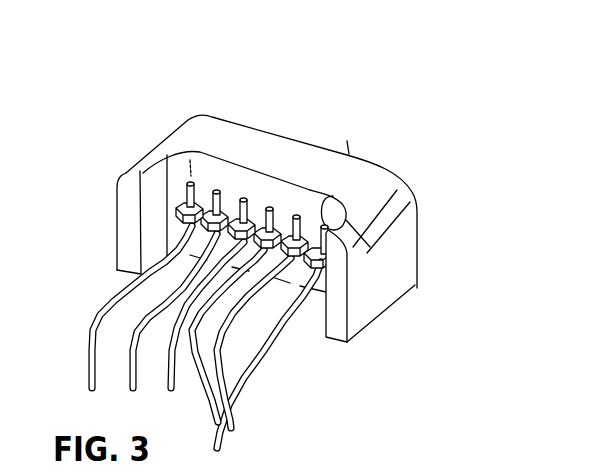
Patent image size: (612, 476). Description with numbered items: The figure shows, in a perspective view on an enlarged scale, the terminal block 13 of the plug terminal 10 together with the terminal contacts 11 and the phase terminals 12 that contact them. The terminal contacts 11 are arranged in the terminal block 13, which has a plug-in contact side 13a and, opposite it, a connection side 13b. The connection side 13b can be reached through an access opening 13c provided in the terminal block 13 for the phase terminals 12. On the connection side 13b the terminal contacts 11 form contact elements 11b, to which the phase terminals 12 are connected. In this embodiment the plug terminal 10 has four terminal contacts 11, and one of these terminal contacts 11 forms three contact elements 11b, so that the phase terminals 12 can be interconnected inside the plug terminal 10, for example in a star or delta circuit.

The plug terminal 10 is at (278, 228).
The terminal contact 11 is at (204, 206).
The contact element 11b is at (288, 205).
The phase terminal 12 is at (243, 205).
The terminal block 13 is at (282, 234).
The plug-in contact side 13a is at (271, 201).
The connection side 13b is at (417, 288).
The access opening 13c is at (305, 330).